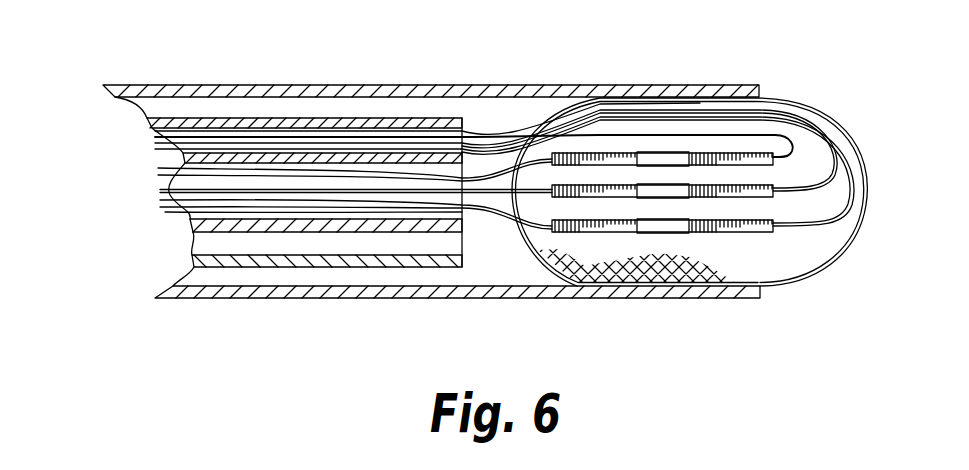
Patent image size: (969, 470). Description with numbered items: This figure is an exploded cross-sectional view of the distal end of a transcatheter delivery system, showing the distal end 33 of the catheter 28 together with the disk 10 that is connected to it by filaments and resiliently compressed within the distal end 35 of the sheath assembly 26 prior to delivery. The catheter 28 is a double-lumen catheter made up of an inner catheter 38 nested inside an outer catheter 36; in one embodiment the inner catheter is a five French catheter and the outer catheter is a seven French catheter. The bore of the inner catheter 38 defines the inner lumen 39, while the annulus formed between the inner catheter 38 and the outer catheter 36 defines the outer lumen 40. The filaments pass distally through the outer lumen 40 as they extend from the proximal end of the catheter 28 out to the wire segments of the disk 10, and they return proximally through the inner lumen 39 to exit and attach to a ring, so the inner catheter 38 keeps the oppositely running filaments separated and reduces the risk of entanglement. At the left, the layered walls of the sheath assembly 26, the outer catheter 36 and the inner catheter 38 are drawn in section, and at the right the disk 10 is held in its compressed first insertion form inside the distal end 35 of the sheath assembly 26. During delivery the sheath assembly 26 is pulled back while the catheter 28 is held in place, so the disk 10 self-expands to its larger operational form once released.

The disk 10 is at (778, 262).
The sheath assembly 26 is at (403, 90).
The catheter 28 is at (253, 118).
The distal end of catheter 33 is at (450, 117).
The distal end of sheath assembly 35 is at (695, 84).
The outer catheter 36 is at (226, 262).
The inner catheter 38 is at (207, 226).
The inner lumen 39 is at (207, 168).
The outer lumen 40 is at (165, 131).